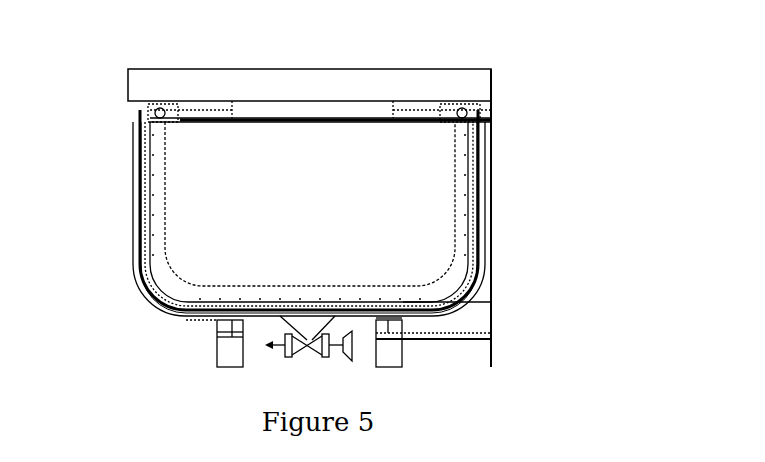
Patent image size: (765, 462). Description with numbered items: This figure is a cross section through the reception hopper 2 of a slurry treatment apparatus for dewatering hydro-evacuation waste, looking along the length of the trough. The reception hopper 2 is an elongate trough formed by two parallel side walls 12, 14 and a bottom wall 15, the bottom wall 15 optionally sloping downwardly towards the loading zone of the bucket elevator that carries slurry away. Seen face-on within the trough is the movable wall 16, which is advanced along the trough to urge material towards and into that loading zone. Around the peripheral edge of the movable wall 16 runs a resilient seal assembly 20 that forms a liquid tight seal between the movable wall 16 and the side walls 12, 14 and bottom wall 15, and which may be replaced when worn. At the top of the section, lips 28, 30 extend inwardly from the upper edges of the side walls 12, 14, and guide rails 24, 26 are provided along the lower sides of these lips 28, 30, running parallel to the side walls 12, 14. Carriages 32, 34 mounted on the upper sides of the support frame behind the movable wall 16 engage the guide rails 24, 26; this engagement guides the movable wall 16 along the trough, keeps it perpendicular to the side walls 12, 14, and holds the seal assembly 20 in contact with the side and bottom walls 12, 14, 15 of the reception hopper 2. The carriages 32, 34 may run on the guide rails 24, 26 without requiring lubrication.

The reception hopper 2 is at (514, 263).
The side wall 12 is at (140, 227).
The side wall 14 is at (488, 201).
The bottom wall 15 is at (262, 302).
The movable wall 16 is at (284, 200).
The resilient seal assembly 20 is at (468, 232).
The guide rail 24 is at (157, 110).
The guide rail 26 is at (463, 120).
The lip 28 is at (155, 103).
The lip 30 is at (460, 105).
The carriage 32 is at (134, 122).
The carriage 34 is at (492, 120).